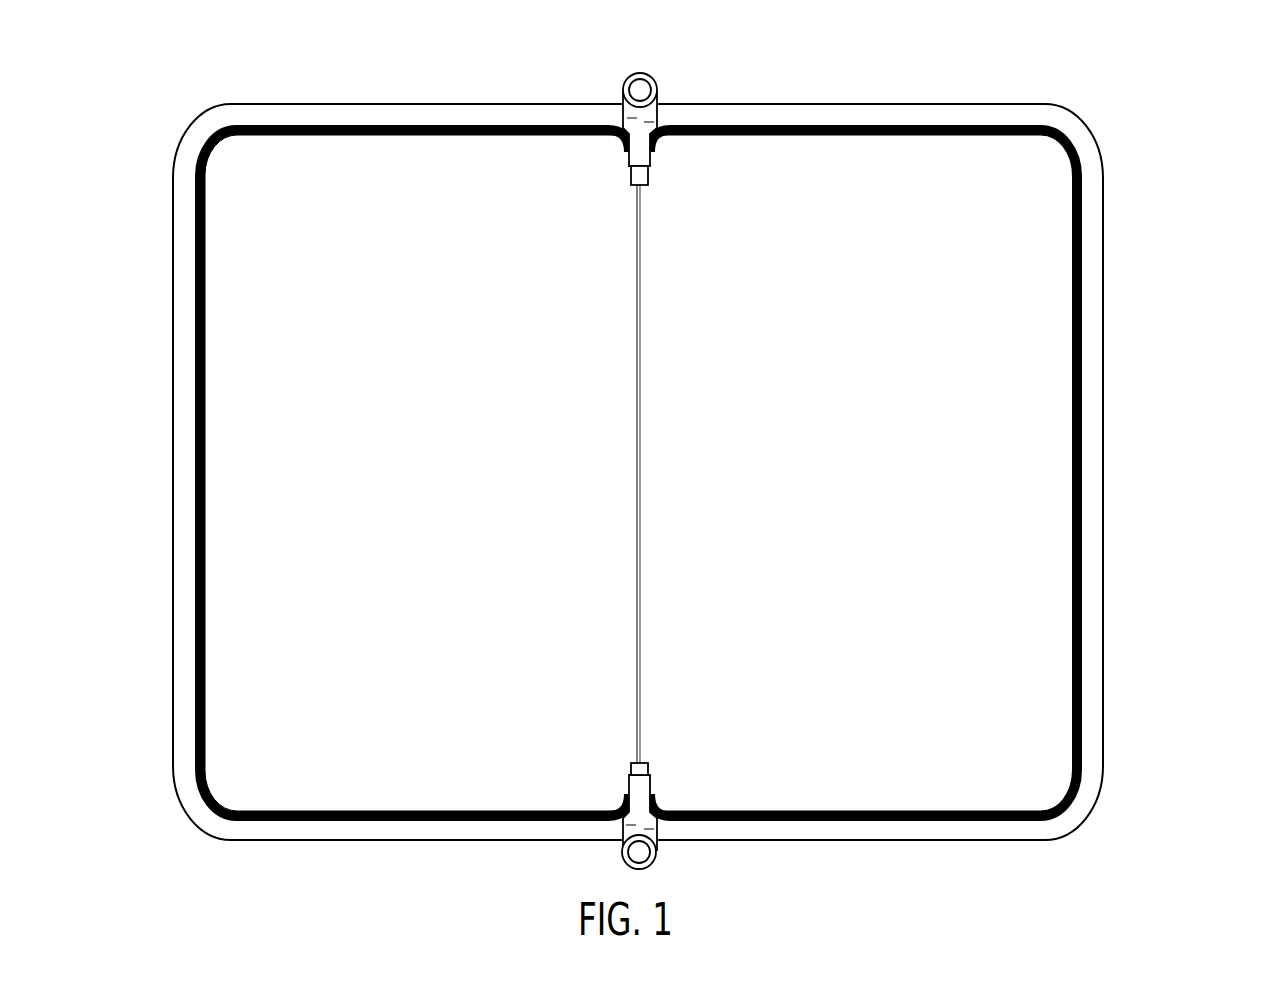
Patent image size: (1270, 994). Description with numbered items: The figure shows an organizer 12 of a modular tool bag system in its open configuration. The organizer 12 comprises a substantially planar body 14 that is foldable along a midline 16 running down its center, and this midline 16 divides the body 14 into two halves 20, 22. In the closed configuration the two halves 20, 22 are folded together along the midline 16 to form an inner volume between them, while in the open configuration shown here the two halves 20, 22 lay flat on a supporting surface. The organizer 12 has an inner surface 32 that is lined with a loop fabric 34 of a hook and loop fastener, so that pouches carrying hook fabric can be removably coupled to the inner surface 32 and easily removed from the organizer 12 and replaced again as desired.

The organizer 12 is at (1108, 92).
The substantially planar body 14 is at (913, 187).
The midline 16 is at (638, 340).
The first half 20 is at (382, 783).
The second half 22 is at (955, 758).
The inner surface 32 is at (260, 420).
The loop fabric 34 is at (1013, 425).